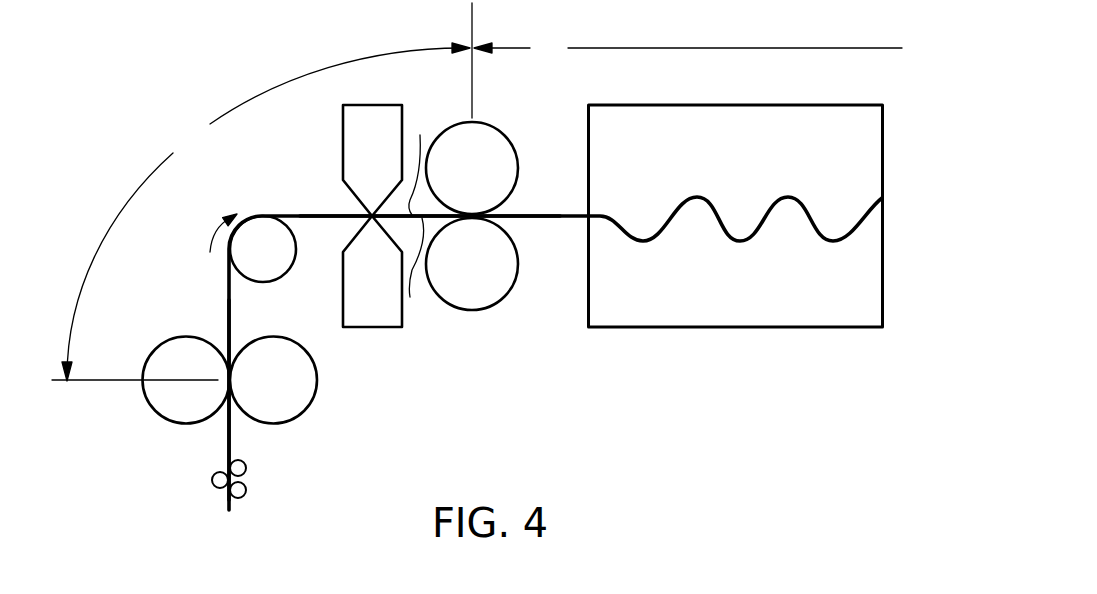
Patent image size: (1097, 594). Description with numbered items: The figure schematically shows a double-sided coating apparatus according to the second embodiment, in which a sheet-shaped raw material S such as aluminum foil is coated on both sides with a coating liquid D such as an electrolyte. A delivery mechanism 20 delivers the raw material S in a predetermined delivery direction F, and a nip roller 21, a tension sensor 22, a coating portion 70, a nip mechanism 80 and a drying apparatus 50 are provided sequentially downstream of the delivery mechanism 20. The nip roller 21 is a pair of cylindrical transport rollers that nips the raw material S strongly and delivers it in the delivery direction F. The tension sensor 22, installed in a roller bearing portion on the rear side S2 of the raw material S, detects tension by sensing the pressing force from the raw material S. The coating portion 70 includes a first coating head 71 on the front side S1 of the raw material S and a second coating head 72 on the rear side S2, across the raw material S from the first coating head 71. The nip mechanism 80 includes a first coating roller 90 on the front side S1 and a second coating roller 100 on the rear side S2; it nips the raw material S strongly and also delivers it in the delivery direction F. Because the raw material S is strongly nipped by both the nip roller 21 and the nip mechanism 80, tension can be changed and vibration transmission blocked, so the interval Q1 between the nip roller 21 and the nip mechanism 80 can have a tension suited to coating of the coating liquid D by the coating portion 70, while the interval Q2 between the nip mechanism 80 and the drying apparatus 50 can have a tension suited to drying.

The delivery mechanism 20 is at (254, 458).
The nip roller 21 is at (318, 378).
The tension sensor 22 is at (297, 240).
The drying apparatus 50 is at (718, 328).
The coating portion 70 is at (349, 242).
The first coating head 71 is at (343, 133).
The second coating head 72 is at (343, 284).
The nip mechanism 80 is at (499, 241).
The first coating roller 90 is at (518, 160).
The second coating roller 100 is at (518, 262).
The raw material S is at (228, 297).
The front side S1 is at (305, 214).
The rear side S2 is at (233, 315).
The coating liquid D is at (418, 217).
The delivery direction F is at (220, 226).
The interval between nip roller and nip mechanism Q1 is at (261, 212).
The interval between nip mechanism and drying apparatus Q2 is at (687, 60).